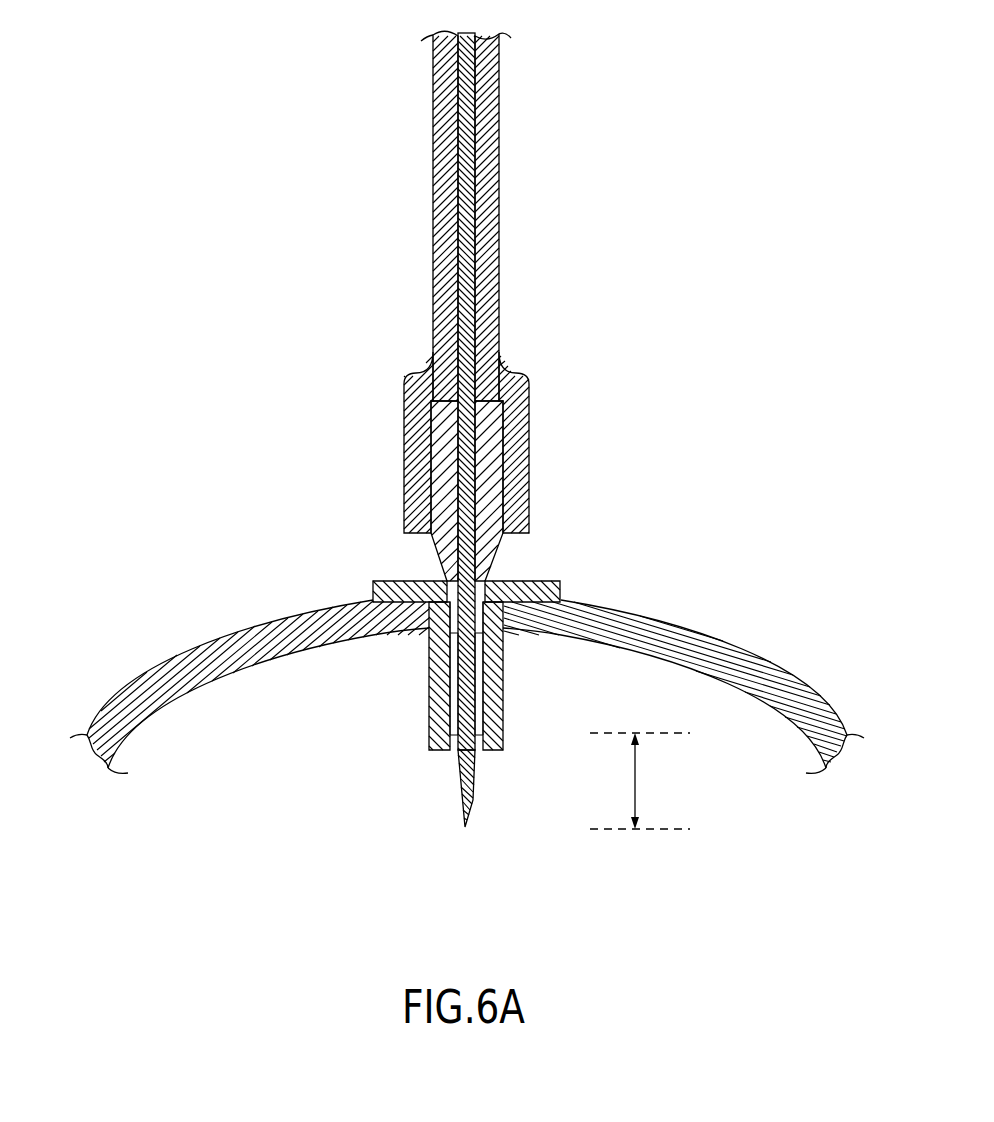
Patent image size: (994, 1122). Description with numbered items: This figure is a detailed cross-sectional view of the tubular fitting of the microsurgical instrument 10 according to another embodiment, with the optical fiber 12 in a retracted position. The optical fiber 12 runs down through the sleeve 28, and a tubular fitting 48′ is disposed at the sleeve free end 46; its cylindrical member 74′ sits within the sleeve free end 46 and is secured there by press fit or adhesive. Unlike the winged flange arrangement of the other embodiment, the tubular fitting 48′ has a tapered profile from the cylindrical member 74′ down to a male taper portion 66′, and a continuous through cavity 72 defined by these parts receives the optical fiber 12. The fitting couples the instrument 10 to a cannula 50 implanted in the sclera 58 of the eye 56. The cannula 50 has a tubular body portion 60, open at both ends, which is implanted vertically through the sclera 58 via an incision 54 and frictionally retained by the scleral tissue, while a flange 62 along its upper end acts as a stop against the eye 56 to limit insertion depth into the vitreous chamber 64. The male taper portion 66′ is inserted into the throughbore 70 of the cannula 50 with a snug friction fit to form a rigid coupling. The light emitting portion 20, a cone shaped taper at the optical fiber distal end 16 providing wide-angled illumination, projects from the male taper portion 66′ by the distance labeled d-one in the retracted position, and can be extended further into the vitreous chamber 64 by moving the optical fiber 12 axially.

The instrument 10 is at (567, 225).
The optical fiber 12 is at (433, 56).
The sleeve 28 is at (424, 152).
The sleeve free end 46 is at (530, 443).
The cylindrical member 74′ is at (432, 431).
The tubular fitting 48′ is at (492, 540).
The cannula 50 is at (559, 572).
The flange 62 is at (378, 582).
The sclera 58 is at (696, 632).
The vitreous chamber 64 is at (227, 704).
The eye 56 is at (822, 690).
The tubular body portion 60 is at (503, 720).
The incision 54 is at (430, 655).
The through cavity 72 is at (448, 690).
The male taper portion 66′ is at (495, 672).
The throughbore 70 is at (453, 756).
The optical fiber distal end 16 is at (436, 820).
The light emitting portion 20 is at (472, 803).